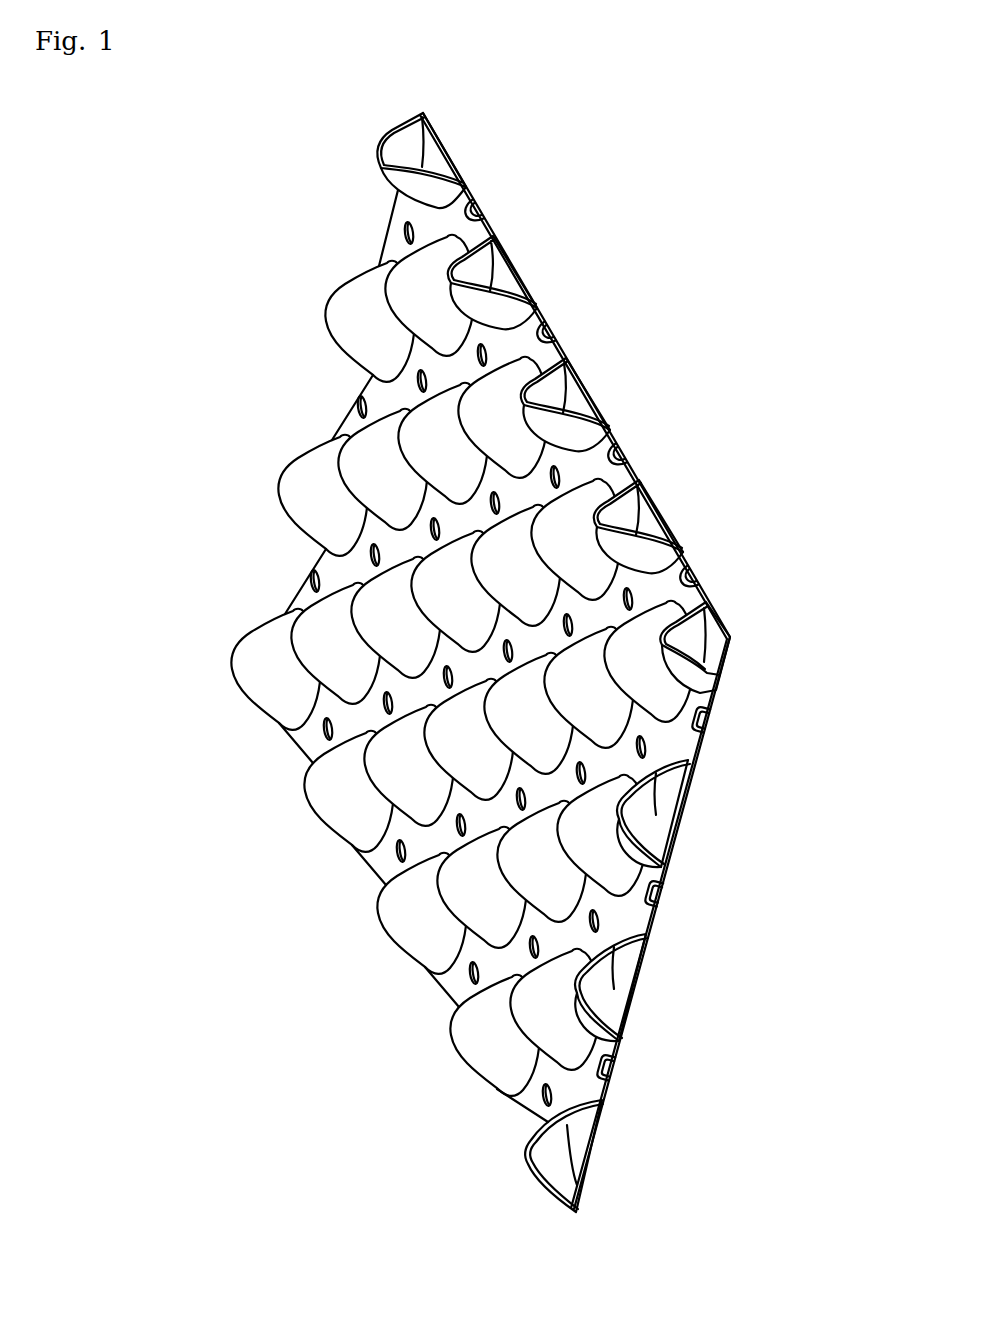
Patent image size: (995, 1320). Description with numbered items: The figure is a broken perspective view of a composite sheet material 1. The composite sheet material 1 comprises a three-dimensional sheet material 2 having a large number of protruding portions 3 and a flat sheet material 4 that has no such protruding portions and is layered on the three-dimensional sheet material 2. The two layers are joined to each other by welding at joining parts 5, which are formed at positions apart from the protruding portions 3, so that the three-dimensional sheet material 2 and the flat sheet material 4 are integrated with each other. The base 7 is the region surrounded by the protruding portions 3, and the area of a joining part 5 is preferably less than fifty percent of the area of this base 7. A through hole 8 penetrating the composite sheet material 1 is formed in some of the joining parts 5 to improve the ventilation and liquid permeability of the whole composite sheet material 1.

The composite sheet material 1 is at (270, 408).
The three-dimensional sheet material 2 is at (451, 1074).
The protruding portion 3 is at (652, 1005).
The flat sheet material 4 is at (625, 975).
The joining part 5 is at (663, 895).
The base 7 is at (637, 907).
The through hole 8 is at (706, 721).